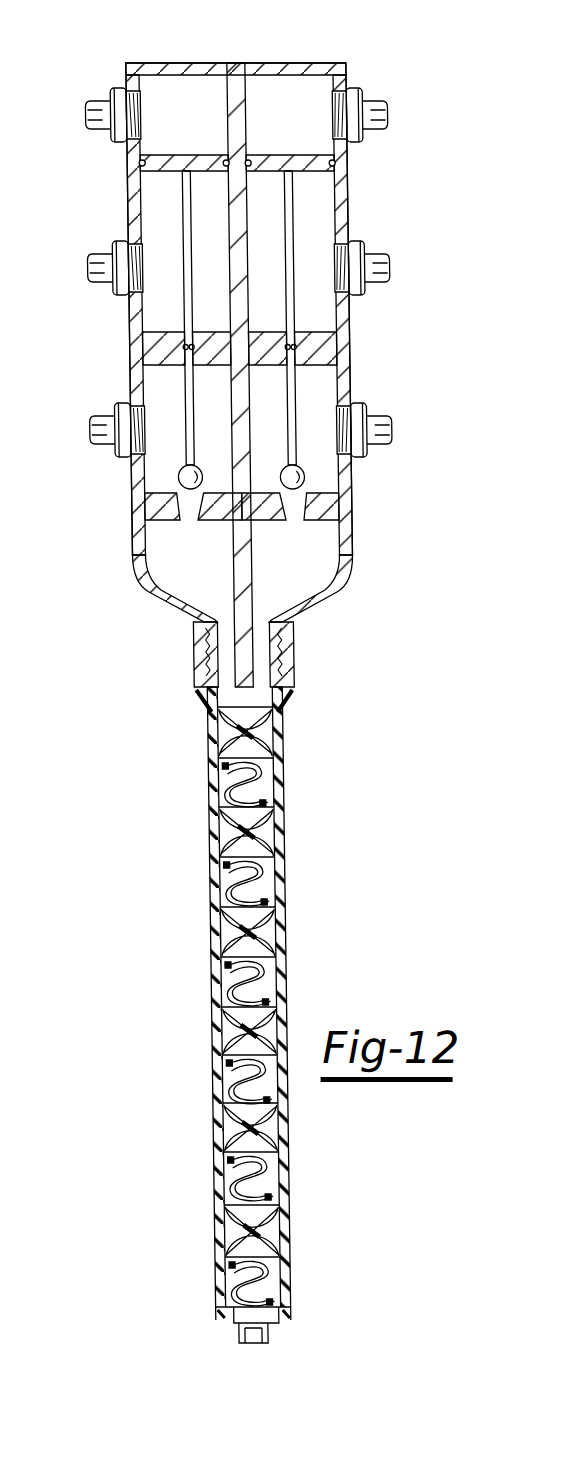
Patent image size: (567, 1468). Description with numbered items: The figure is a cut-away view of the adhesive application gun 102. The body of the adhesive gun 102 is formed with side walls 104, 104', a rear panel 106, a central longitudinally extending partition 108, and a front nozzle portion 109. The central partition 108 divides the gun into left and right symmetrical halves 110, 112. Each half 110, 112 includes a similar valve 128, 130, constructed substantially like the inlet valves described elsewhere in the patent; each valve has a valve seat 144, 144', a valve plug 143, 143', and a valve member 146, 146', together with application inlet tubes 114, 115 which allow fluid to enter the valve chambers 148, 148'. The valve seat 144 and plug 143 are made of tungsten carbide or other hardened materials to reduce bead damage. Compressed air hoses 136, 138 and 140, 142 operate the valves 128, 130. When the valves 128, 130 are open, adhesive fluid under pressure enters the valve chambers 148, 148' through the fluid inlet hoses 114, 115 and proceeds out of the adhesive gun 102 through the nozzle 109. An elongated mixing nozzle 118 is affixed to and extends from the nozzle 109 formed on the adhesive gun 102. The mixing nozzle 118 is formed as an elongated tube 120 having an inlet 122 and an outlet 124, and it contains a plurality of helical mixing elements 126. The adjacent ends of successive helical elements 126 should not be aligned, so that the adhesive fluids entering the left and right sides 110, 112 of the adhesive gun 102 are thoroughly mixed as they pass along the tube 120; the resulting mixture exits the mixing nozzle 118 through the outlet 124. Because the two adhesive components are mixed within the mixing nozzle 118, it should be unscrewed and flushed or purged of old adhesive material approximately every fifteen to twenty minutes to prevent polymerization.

The adhesive application gun 102 is at (394, 72).
The side wall 104 is at (94, 315).
The side wall 104' is at (390, 315).
The rear panel 106 is at (189, 64).
The central longitudinally extending partition 108 is at (248, 577).
The front nozzle portion 109 is at (271, 672).
The left half 110 is at (246, 60).
The right half 112 is at (342, 62).
The application inlet tube 114 is at (109, 448).
The application inlet tube 115 is at (388, 444).
The elongated mixing nozzle 118 is at (290, 829).
The elongated tube 120 is at (270, 958).
The inlet 122 is at (230, 695).
The outlet 124 is at (246, 1350).
The helical mixing elements 126 is at (245, 833).
The valve 128 is at (122, 584).
The valve 130 is at (359, 590).
The compressed air hose 136 is at (111, 280).
The compressed air hose 138 is at (113, 106).
The compressed air hose 140 is at (381, 258).
The compressed air hose 142 is at (386, 125).
The valve plug 143 is at (102, 474).
The valve plug 143' is at (386, 467).
The valve seat 144 is at (148, 505).
The valve seat 144' is at (336, 500).
The valve member 146 is at (138, 341).
The valve member 146' is at (353, 326).
The valve chamber 148 is at (102, 318).
The valve chamber 148' is at (361, 318).